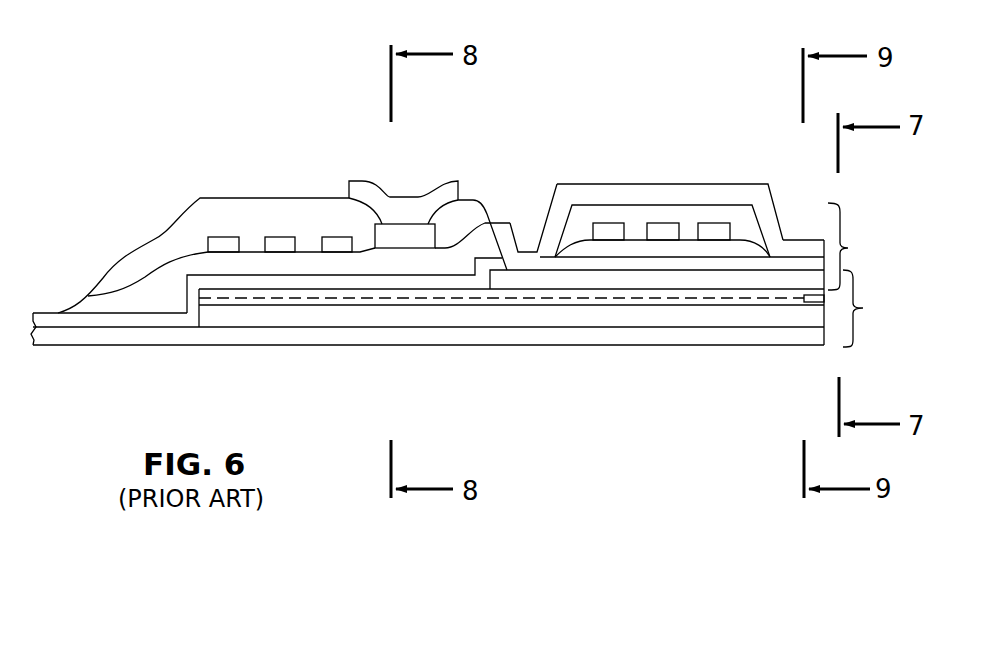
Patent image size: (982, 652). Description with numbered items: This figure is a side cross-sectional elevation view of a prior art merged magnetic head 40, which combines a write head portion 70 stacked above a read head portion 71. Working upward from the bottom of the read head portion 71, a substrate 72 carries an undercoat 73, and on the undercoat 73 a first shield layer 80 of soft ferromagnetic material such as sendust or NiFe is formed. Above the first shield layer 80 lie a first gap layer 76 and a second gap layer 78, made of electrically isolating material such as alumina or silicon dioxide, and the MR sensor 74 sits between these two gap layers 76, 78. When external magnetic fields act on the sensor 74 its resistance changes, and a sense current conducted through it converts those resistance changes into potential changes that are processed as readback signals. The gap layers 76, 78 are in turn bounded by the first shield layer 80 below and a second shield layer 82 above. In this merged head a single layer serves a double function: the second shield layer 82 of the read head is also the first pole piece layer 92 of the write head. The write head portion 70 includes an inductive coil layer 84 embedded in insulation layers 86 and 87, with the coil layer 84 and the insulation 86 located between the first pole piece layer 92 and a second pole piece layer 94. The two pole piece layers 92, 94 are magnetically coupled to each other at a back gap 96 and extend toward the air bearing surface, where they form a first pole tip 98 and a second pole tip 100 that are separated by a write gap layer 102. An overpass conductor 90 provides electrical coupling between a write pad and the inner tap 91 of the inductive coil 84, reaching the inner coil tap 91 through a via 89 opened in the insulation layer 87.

The merged magnetic head 40 is at (300, 63).
The write head portion 70 is at (856, 246).
The read head portion 71 is at (871, 308).
The substrate 72 is at (218, 401).
The undercoat 73 is at (329, 338).
The MR sensor 74 is at (812, 303).
The first gap layer 76 is at (592, 305).
The second gap layer 78 is at (554, 292).
The first shield layer 80 is at (408, 318).
The second shield layer 82 is at (506, 281).
The inductive coil layer 84 is at (277, 237).
The insulation layer 86 is at (165, 285).
The insulation layer 87 is at (195, 215).
The via 89 is at (368, 215).
The overpass conductor 90 is at (440, 190).
The inner coil tap 91 is at (409, 232).
The first pole piece layer 92 is at (702, 280).
The second pole piece layer 94 is at (655, 192).
The back gap 96 is at (530, 242).
The first pole tip 98 is at (758, 280).
The second pole tip 100 is at (805, 245).
The write gap layer 102 is at (747, 262).